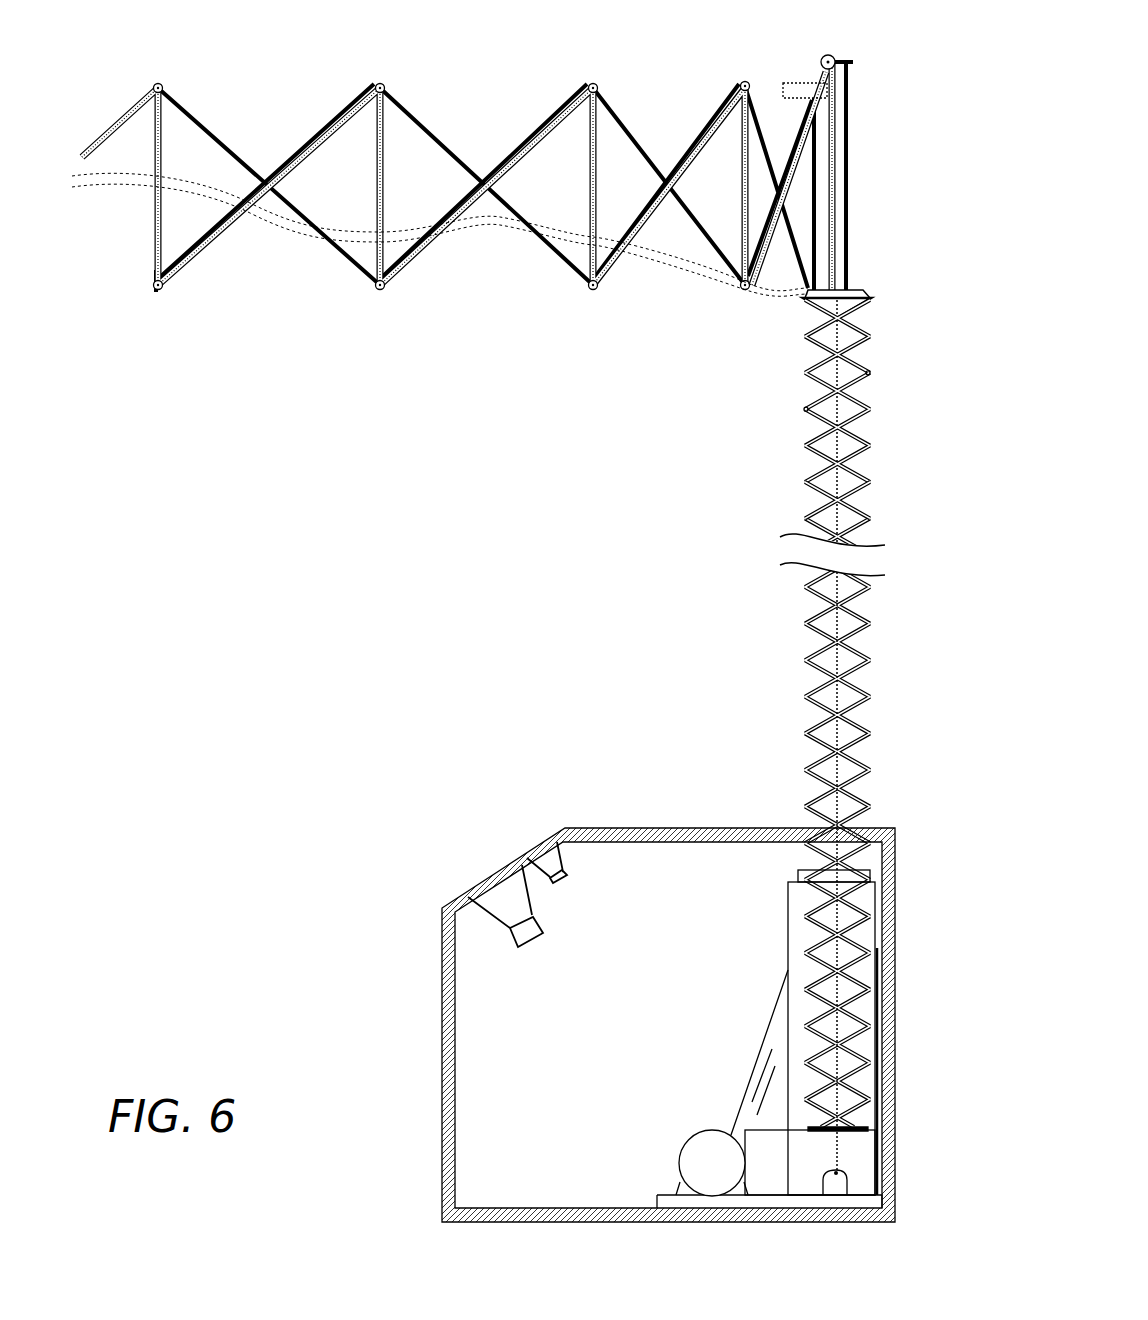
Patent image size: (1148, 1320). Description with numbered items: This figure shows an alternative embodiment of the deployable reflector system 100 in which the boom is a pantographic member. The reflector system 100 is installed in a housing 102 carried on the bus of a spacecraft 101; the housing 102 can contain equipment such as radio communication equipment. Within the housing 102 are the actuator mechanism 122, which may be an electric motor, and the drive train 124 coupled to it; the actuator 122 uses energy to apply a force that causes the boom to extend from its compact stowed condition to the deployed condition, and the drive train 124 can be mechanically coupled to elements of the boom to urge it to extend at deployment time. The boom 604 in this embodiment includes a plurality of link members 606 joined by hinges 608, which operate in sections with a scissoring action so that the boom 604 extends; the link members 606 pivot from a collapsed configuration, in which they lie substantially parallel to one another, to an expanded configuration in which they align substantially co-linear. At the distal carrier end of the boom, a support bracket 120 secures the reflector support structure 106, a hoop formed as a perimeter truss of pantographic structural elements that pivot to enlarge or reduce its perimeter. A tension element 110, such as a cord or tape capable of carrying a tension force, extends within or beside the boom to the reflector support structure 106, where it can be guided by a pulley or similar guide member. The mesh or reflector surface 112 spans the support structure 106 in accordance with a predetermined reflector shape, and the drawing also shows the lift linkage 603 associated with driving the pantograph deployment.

The deployable reflector system 100 is at (918, 132).
The spacecraft 101 is at (398, 985).
The housing 102 is at (447, 1100).
The reflector support structure 106 is at (87, 280).
The tension element 110 is at (120, 117).
The hose 112 is at (472, 230).
The support bracket 120 is at (782, 95).
The actuator mechanism 122 is at (730, 1173).
The drive train 124 is at (763, 1133).
The lift mechanism 603 is at (752, 985).
The boom 604 is at (882, 470).
The link members 606 is at (858, 363).
The hinges 608 is at (868, 368).